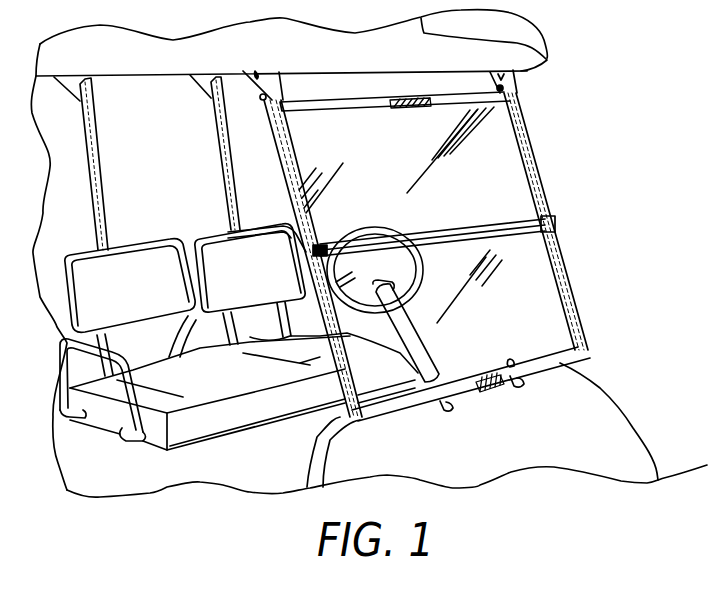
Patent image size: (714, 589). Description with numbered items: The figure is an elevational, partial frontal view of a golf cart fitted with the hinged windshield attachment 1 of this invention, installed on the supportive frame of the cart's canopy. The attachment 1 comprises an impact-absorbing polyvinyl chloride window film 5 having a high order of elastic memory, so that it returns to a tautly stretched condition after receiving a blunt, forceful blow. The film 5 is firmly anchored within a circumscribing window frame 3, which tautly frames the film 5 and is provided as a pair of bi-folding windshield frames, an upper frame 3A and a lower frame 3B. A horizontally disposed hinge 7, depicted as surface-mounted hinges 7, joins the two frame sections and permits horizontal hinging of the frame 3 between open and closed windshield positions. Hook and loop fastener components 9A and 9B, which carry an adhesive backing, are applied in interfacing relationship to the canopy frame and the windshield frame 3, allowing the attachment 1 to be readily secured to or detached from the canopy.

The hinged windshield attachment 1 is at (475, 237).
The window frame 3 is at (460, 240).
The upper windshield frame 3A is at (512, 108).
The lower windshield frame 3B is at (582, 294).
The polyvinyl chloride film 5 is at (521, 193).
The hinge 7 is at (557, 221).
The canopy frame fastener 9A is at (500, 387).
The canopy frame fastener 9B is at (420, 107).